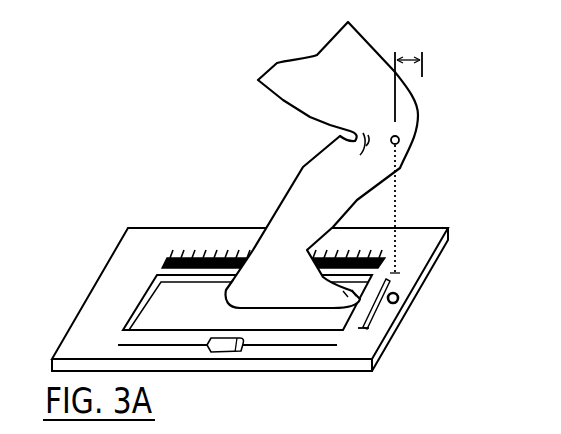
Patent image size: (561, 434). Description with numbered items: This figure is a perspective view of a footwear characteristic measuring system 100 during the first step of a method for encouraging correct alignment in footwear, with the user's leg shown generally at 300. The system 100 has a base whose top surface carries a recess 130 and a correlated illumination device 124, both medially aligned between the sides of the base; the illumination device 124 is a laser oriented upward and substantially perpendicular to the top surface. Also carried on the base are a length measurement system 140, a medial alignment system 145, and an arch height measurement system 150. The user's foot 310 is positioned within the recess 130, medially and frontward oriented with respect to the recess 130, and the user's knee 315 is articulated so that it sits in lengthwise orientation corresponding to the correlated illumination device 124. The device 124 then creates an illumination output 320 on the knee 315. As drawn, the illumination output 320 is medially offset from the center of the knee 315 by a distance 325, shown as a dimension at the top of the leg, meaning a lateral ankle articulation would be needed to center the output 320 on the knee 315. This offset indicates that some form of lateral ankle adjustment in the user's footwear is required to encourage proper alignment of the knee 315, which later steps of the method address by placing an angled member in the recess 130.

The footwear characteristic measuring system 100 is at (443, 216).
The correlated illumination device 124 is at (398, 298).
The recess 130 is at (185, 300).
The length measurement system 140 is at (235, 256).
The medial alignment system 145 is at (378, 308).
The arch height measurement system 150 is at (228, 352).
The leg of user 300 is at (384, 165).
The foot 310 is at (292, 297).
The knee 315 is at (418, 124).
The illumination output 320 is at (399, 140).
The distance 325 is at (406, 57).